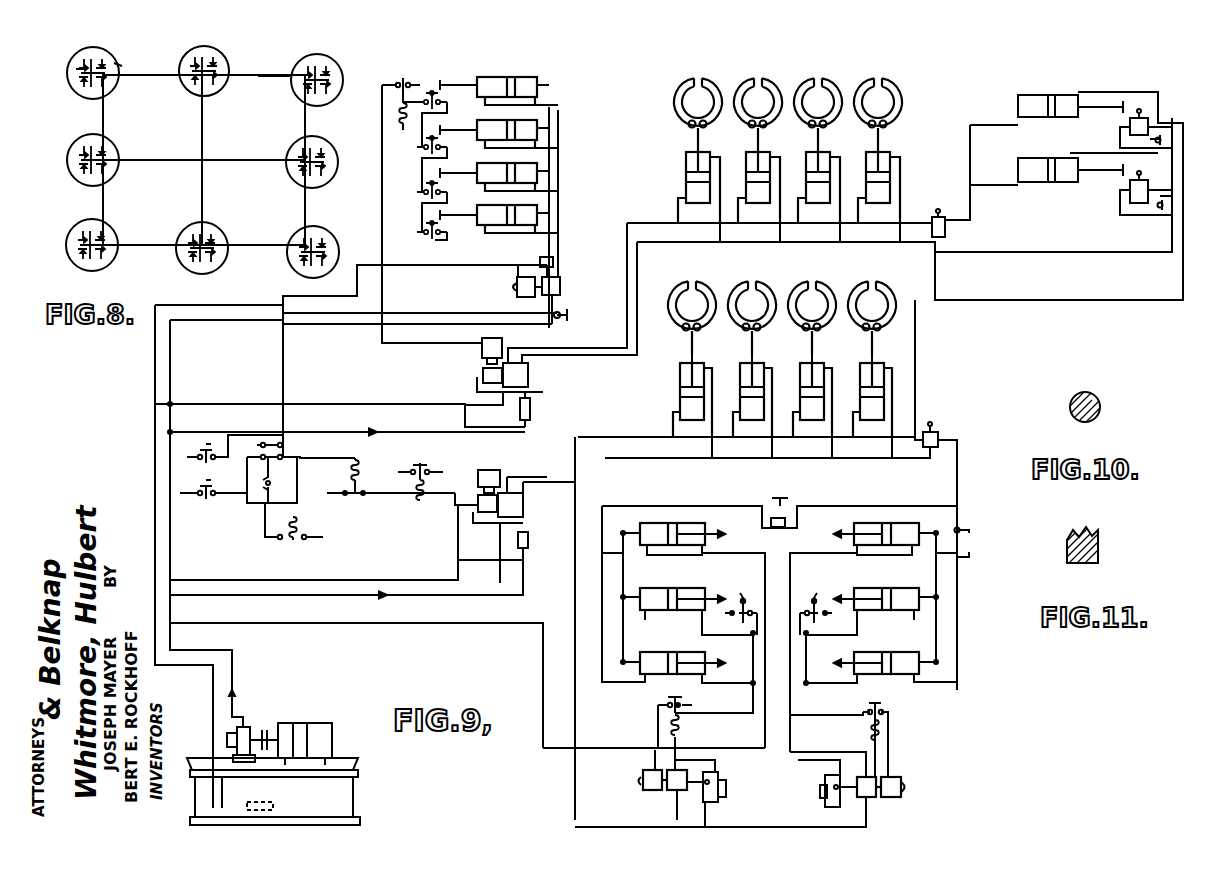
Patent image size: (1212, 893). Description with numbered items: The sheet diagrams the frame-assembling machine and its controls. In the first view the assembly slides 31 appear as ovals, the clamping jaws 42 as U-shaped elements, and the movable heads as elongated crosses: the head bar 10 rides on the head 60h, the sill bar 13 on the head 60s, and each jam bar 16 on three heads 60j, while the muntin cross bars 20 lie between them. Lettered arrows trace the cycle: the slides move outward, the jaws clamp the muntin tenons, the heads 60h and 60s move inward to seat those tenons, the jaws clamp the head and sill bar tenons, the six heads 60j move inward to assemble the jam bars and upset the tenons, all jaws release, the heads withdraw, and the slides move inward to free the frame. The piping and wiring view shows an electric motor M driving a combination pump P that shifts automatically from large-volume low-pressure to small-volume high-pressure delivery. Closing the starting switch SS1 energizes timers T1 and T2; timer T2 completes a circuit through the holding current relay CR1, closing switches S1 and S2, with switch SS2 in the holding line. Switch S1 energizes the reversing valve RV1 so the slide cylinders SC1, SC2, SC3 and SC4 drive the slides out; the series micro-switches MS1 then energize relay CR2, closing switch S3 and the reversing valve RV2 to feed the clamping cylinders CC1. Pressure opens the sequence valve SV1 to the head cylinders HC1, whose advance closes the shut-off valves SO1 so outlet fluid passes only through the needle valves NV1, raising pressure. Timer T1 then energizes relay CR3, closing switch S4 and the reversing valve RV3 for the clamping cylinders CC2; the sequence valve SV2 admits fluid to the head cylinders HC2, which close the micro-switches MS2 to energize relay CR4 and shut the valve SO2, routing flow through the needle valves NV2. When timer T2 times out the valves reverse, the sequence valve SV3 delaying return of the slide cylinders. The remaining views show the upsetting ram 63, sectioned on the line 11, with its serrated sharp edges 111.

In FIG. 8, the assembly slide 31 is at (76, 69).
In FIG. 8, the clamping jaw 42 is at (122, 66).
In FIG. 8, the head bar 10 is at (268, 76).
In FIG. 8, the muntin cross bar 20 is at (203, 126).
In FIG. 8, the jam bar 16 is at (103, 194).
In FIG. 8, the sill bar 13 is at (258, 245).
In FIG. 8, the jam bar head 60j is at (72, 86).
In FIG. 8, the head bar head 60h is at (190, 88).
In FIG. 8, the sill bar head 60s is at (204, 274).
In FIG. 9, the switch S3 is at (404, 83).
In FIG. 9, the relay CR2 is at (400, 122).
In FIG. 9, the micro-switch MS1 is at (437, 238).
In FIG. 9, the slide cylinder SC1 is at (520, 77).
In FIG. 9, the slide cylinder SC2 is at (522, 122).
In FIG. 9, the slide cylinder SC3 is at (540, 173).
In FIG. 9, the slide cylinder SC4 is at (540, 215).
In FIG. 9, the sequence valve SV3 is at (553, 262).
In FIG. 9, the reversing valve RV1 is at (560, 287).
In FIG. 9, the clamping cylinder CC1 is at (884, 195).
In FIG. 9, the sequence valve SV1 is at (945, 234).
In FIG. 9, the head cylinder HC1 is at (1058, 183).
In FIG. 9, the shut-off valve SO1 is at (1128, 194).
In FIG. 9, the needle valve NV1 is at (1150, 205).
In FIG. 9, the reversing valve RV2 is at (483, 368).
In FIG. 9, the reversing valve RV3 is at (470, 505).
In FIG. 9, the switch SS2 is at (208, 448).
In FIG. 9, the starting switch SS1 is at (213, 483).
In FIG. 9, the switch S1 is at (288, 447).
In FIG. 9, the switch S2 is at (302, 458).
In FIG. 9, the holding current relay CR1 is at (286, 485).
In FIG. 9, the timer T1 is at (358, 467).
In FIG. 9, the switch S4 is at (420, 463).
In FIG. 9, the relay CR3 is at (423, 494).
In FIG. 9, the timer T2 is at (297, 523).
In FIG. 9, the clamping cylinder CC2 is at (887, 405).
In FIG. 9, the sequence valve SV2 is at (939, 432).
In FIG. 9, the head cylinder HC2 is at (664, 523).
In FIG. 9, the micro-switch MS2 is at (742, 597).
In FIG. 9, the relay CR4 is at (882, 718).
In FIG. 9, the shut-off valve SO2 is at (677, 790).
In FIG. 9, the needle valve NV2 is at (712, 802).
In FIG. 9, the pump P is at (265, 727).
In FIG. 9, the electric motor M is at (322, 723).
In FIG. 10, the ram 63 is at (1096, 404).
In FIG. 11, the ram 63 is at (1100, 550).
In FIG. 10, the section line 11 is at (1072, 392).
In FIG. 10, the sharp edge 111 is at (1075, 416).
In FIG. 11, the sharp edge 111 is at (1088, 528).